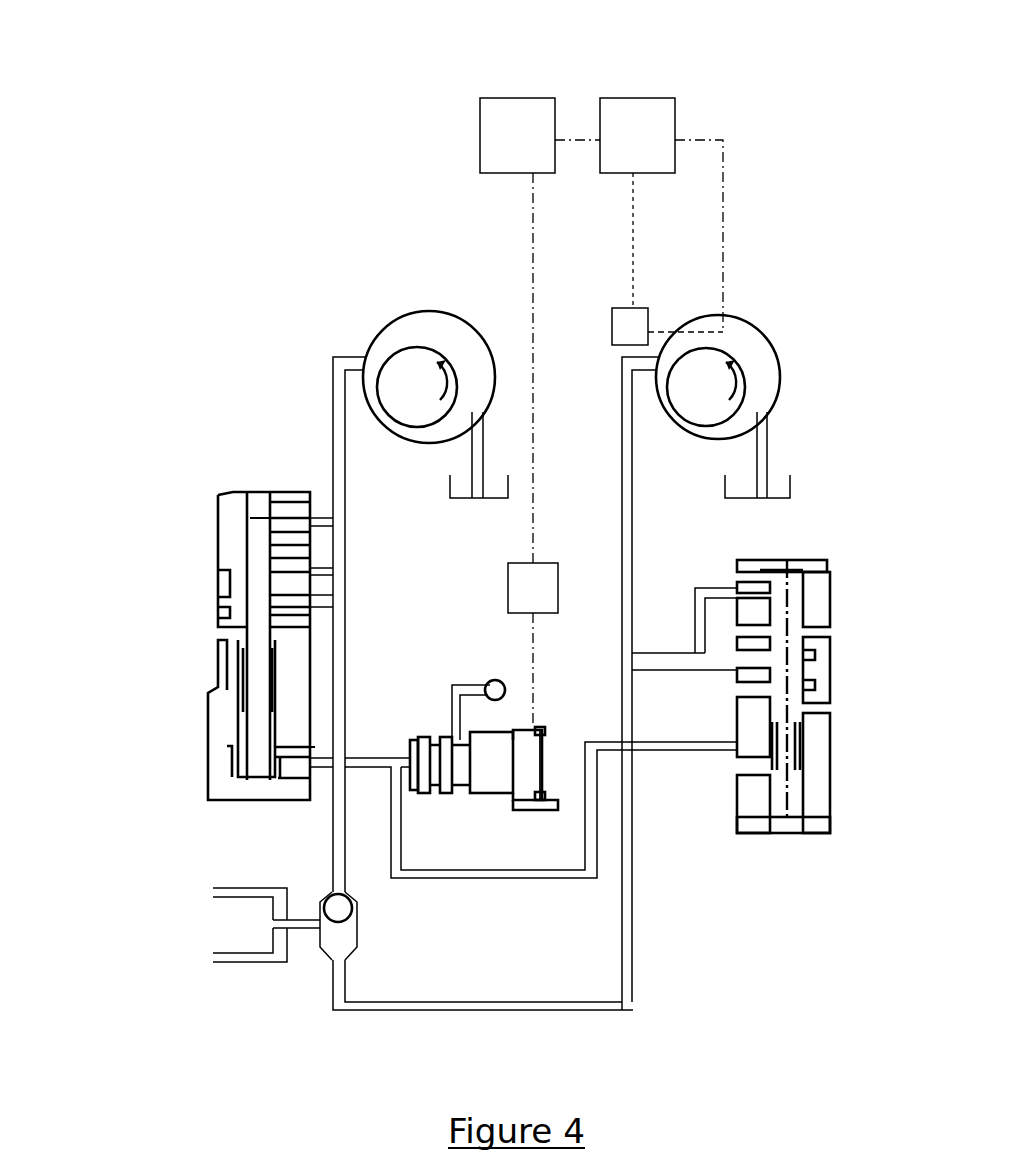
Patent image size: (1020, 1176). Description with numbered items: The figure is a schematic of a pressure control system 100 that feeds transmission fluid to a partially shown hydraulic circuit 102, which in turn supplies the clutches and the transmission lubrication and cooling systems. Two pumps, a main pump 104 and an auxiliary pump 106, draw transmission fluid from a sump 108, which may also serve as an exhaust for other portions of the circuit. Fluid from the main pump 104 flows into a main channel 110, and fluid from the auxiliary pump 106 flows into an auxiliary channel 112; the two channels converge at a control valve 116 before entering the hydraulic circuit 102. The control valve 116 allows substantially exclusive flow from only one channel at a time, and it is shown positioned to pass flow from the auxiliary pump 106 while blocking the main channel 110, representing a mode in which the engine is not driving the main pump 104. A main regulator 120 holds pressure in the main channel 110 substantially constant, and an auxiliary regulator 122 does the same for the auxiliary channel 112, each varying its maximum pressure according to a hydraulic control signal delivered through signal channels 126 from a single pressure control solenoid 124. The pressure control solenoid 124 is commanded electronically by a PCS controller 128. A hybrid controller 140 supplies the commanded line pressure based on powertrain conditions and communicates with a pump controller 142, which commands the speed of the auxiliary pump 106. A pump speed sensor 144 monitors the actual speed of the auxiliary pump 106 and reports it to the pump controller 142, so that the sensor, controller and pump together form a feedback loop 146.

The pressure control system 100 is at (205, 385).
The hydraulic circuit 102 is at (250, 965).
The main pump 104 is at (368, 340).
The auxiliary pump 106 is at (778, 347).
The sump 108 is at (450, 485).
The main channel 110 is at (346, 628).
The auxiliary channel 112 is at (620, 638).
The control valve 116 is at (363, 923).
The main regulator 120 is at (195, 590).
The auxiliary regulator 122 is at (732, 578).
The pressure control solenoid 124 is at (438, 722).
The signal channels 126 is at (373, 750).
The PCS controller 128 is at (508, 585).
The hybrid controller 140 is at (480, 113).
The pump controller 142 is at (635, 98).
The pump speed sensor 144 is at (613, 345).
The feedback loop 146 is at (633, 238).